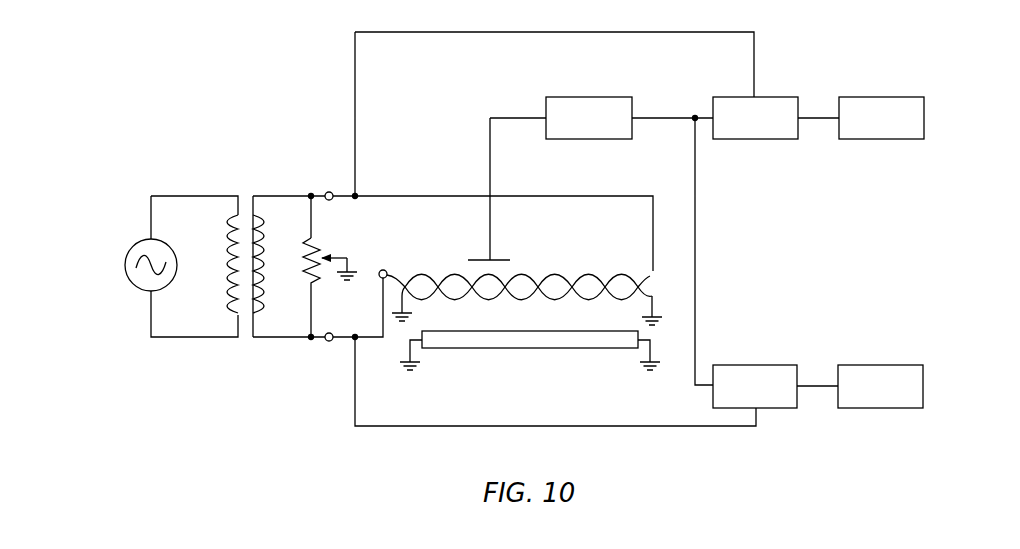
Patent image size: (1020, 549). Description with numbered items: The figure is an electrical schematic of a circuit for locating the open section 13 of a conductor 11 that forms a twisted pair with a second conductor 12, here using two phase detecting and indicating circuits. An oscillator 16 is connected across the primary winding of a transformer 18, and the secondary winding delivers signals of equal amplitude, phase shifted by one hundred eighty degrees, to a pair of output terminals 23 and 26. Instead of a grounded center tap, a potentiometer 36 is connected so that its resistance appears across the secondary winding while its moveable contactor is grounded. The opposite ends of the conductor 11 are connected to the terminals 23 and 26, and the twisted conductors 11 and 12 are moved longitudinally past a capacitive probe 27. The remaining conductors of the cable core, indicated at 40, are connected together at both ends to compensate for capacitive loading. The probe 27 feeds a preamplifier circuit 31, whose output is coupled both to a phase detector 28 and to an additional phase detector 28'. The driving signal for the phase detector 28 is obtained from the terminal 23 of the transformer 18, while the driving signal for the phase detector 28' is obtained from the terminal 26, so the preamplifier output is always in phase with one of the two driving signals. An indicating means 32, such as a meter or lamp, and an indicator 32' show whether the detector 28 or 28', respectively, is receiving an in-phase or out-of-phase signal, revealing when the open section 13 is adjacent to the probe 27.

The oscillator 16 is at (140, 246).
The transformer 18 is at (246, 190).
The output terminal 23 is at (329, 191).
The output terminal 26 is at (328, 342).
The potentiometer 36 is at (323, 252).
The conductor 11 is at (390, 272).
The conductor 12 is at (424, 276).
The open section 13 is at (468, 272).
The capacitive probe 27 is at (476, 258).
The remaining conductors of the core 40 is at (588, 342).
The preamplifier circuit 31 is at (610, 96).
The phase detector 28 is at (759, 93).
The indicating means 32 is at (881, 90).
The additional phase detector 28' is at (755, 372).
The indicator 32' is at (880, 371).